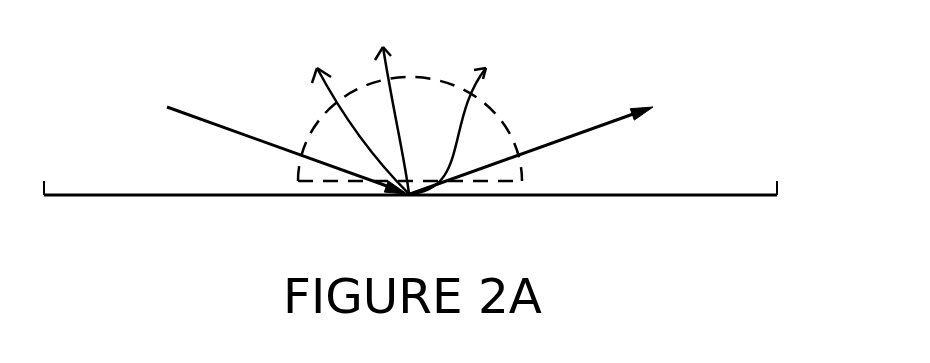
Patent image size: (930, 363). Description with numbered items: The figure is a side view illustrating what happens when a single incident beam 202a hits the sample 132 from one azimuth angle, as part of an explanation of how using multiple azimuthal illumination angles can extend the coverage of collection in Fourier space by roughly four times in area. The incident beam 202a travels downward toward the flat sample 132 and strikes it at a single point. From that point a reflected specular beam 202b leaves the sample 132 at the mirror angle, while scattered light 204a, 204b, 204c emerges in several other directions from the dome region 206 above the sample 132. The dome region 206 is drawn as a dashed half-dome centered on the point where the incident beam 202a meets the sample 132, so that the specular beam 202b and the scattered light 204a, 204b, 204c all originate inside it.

The sample 132 is at (710, 182).
The incident beam 202a is at (178, 112).
The reflected specular beam 202b is at (595, 132).
The scattered light 204a is at (318, 82).
The scattered light 204b is at (385, 80).
The scattered light 204c is at (457, 122).
The dome region 206 is at (507, 133).